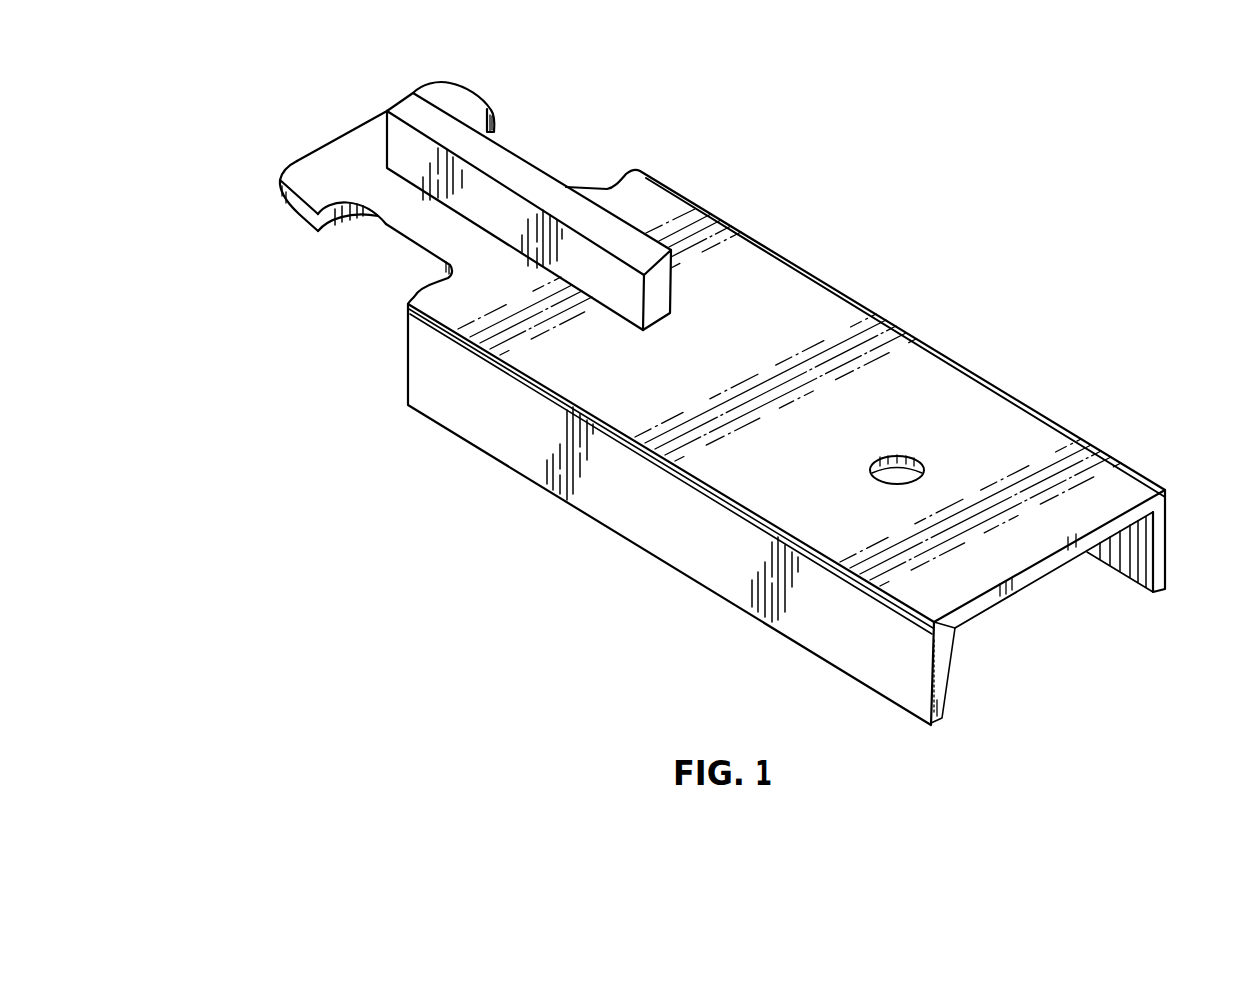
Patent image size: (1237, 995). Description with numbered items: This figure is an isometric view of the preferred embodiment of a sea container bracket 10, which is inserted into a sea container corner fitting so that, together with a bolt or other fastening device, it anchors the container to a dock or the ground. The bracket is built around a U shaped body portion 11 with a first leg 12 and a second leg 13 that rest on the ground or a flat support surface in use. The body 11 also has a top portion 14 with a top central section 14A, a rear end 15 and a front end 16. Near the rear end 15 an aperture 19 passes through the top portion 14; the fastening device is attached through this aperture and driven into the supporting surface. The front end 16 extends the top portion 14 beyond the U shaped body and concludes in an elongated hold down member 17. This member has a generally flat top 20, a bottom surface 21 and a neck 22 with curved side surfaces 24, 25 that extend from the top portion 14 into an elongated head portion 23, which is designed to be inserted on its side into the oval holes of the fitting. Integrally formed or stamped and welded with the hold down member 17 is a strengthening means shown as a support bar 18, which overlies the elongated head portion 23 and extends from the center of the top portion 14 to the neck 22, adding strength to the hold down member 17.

The sea container bracket 10 is at (987, 246).
The U shaped body portion 11 is at (825, 423).
The first leg 12 is at (937, 718).
The second leg 13 is at (1162, 589).
The top portion 14 is at (1028, 450).
The top central section 14A is at (722, 305).
The rear end 15 is at (1160, 455).
The front end 16 is at (476, 94).
The elongated hold down member 17 is at (299, 211).
The support bar 18 is at (450, 137).
The aperture 19 is at (912, 457).
The flat top 20 is at (342, 150).
The bottom surface 21 is at (973, 620).
The neck 22 is at (458, 237).
The elongated head portion 23 is at (238, 130).
The curved side surface 24 is at (548, 165).
The curved side surface 25 is at (390, 228).